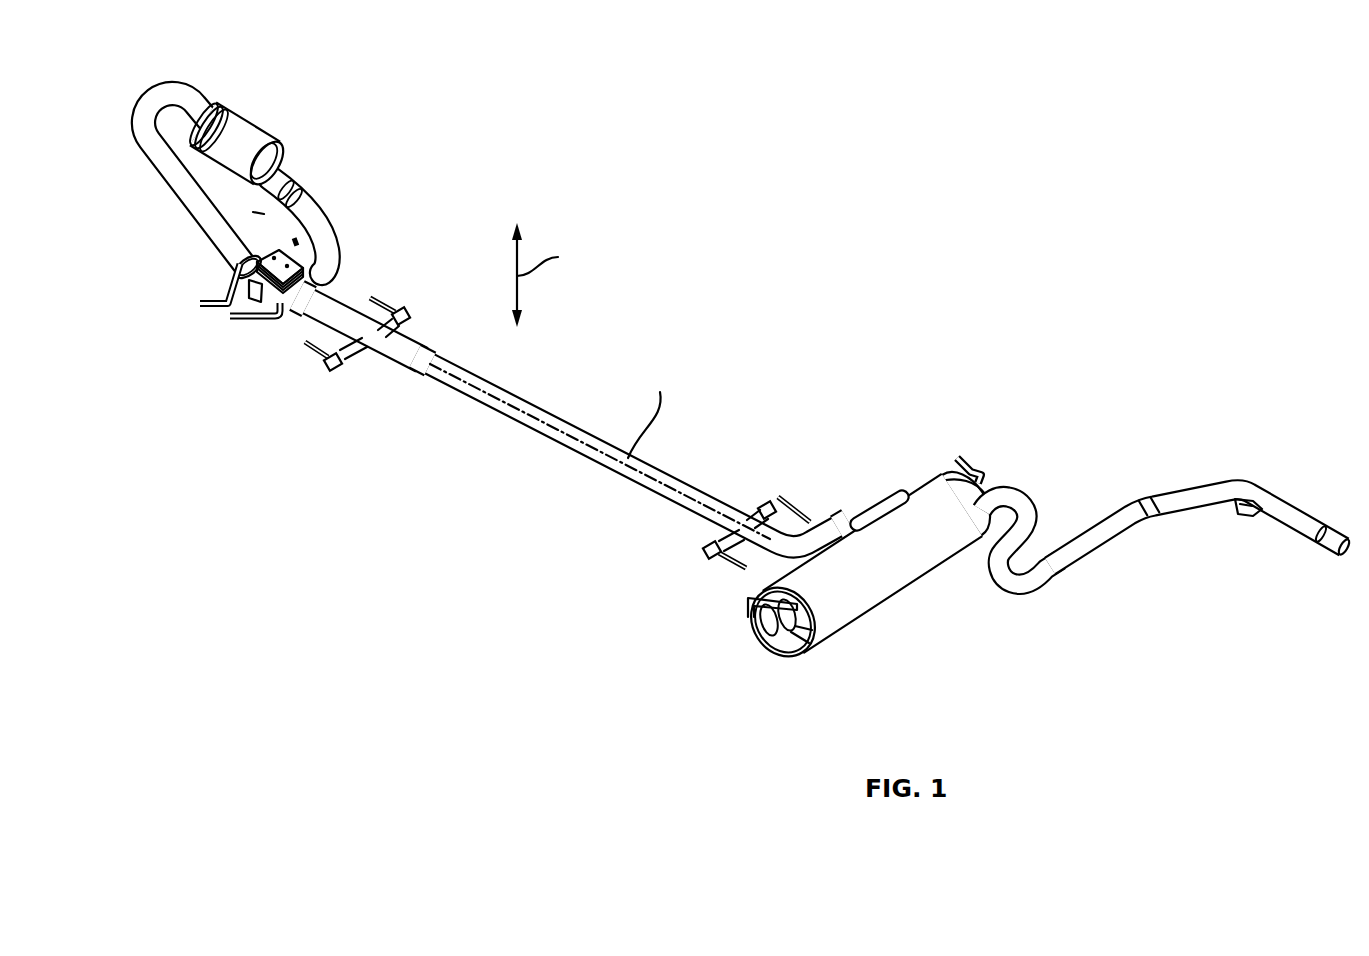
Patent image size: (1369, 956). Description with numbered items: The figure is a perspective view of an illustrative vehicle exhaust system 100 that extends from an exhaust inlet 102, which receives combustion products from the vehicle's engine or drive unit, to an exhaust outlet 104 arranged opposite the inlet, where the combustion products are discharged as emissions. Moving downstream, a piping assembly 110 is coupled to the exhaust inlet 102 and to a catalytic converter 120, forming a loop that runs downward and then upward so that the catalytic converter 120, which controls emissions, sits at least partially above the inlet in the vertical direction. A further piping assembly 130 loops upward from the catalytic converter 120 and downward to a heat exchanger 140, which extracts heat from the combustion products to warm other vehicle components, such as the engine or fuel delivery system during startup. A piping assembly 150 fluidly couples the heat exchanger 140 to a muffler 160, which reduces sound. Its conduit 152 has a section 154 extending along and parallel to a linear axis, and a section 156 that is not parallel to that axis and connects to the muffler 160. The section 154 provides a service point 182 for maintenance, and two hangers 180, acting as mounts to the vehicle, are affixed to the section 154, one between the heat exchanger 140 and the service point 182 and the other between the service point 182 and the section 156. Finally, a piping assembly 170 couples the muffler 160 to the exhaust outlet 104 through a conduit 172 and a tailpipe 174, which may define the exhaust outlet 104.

The exhaust system 100 is at (698, 368).
The exhaust inlet 102 is at (146, 180).
The exhaust outlet 104 is at (1333, 551).
The piping assembly 110 is at (320, 215).
The catalytic converter 120 is at (248, 140).
The piping assembly 130 is at (157, 173).
The heat exchanger 140 is at (315, 278).
The piping assembly 150 is at (572, 424).
The conduit 152 is at (637, 476).
The section 154 is at (708, 488).
The section 156 is at (828, 534).
The muffler 160 is at (857, 540).
The piping assembly 170 is at (1160, 492).
The conduit 172 is at (1027, 510).
The tailpipe 174 is at (1237, 481).
The hangers 180 is at (352, 373).
The service point 182 is at (421, 379).